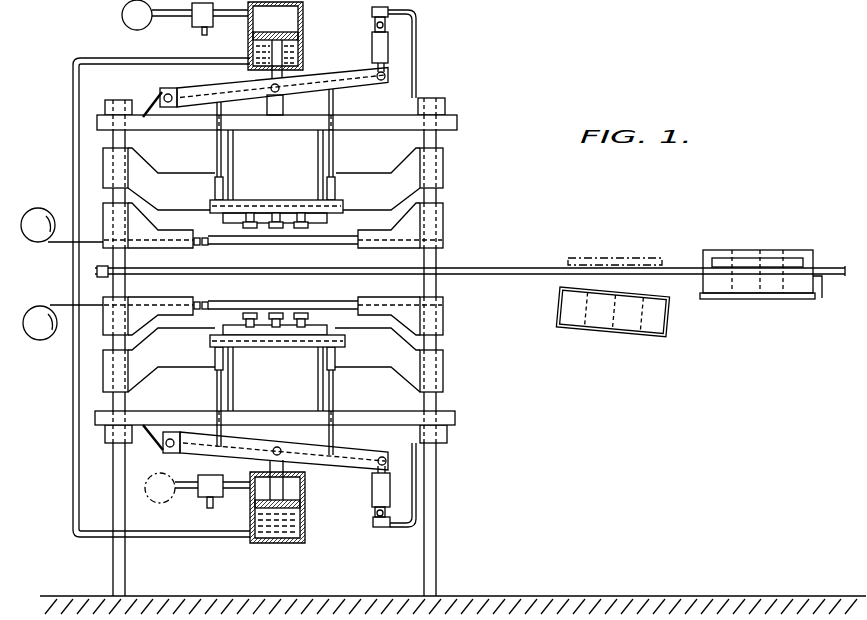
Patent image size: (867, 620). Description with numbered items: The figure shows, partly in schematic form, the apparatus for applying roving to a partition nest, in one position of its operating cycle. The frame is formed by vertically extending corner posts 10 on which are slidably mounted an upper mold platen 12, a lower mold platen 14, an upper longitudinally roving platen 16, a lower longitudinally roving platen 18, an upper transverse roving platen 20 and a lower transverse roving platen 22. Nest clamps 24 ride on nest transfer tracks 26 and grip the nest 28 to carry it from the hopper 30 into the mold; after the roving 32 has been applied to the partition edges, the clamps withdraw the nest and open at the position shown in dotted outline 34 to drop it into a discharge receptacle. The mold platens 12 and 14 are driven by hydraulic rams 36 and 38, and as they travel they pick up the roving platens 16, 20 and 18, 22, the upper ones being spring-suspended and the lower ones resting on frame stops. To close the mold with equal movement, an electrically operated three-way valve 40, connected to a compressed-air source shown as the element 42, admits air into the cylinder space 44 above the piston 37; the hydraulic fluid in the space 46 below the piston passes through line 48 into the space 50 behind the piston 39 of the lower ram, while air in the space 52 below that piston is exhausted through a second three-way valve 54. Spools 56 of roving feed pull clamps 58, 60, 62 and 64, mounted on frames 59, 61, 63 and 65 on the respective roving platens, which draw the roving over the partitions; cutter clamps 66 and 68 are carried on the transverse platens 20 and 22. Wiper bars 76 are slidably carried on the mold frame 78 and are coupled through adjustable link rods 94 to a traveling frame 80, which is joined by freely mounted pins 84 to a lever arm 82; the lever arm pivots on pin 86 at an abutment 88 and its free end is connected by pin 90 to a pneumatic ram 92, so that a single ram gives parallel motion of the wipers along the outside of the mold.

The corner posts 10 is at (440, 530).
The upper mold platen 12 is at (456, 122).
The lower mold platen 14 is at (456, 418).
The upper longitudinally roving platen 16 is at (445, 167).
The lower longitudinally roving platen 18 is at (445, 375).
The upper transverse roving platen 20 is at (445, 218).
The lower transverse roving platen 22 is at (445, 310).
The nest clamps 24 is at (712, 260).
The nest transfer tracks 26 is at (830, 275).
The nest 28 is at (780, 250).
The hopper 30 is at (737, 300).
The roving 32 is at (673, 302).
The dotted outline 34 is at (614, 260).
The hydraulic ram 36 is at (300, 45).
The piston 37 is at (298, 34).
The hydraulic ram 38 is at (304, 517).
The piston 39 is at (293, 498).
The 3-way valve 40 is at (212, 24).
The fluid reservoir bulb 42 is at (122, 13).
The cylinder space 44 is at (290, 17).
The space 46 is at (303, 62).
The line 48 is at (118, 58).
The space 50 is at (292, 533).
The space 52 is at (303, 478).
The 3-way valve 54 is at (222, 495).
The spools 56 is at (38, 208).
The pull clamp 58 is at (312, 222).
The frame 59 is at (272, 200).
The pull clamp 60 is at (205, 246).
The frame 61 is at (287, 242).
The pull clamp 62 is at (306, 318).
The frame 63 is at (280, 347).
The pull clamp 64 is at (205, 301).
The frame 65 is at (295, 303).
The cutter clamp 66 is at (196, 246).
The cutter clamp 68 is at (196, 300).
The wiper bars 76 is at (336, 190).
The mold frame 78 is at (318, 148).
The traveling frame 80 is at (220, 80).
The lever arm 82 is at (348, 82).
The pins 84 is at (278, 94).
The pin 86 is at (170, 72).
The abutment 88 is at (152, 96).
The pin 90 is at (388, 80).
The pneumatic ram 92 is at (389, 50).
The adjustable link rods 94 is at (334, 153).